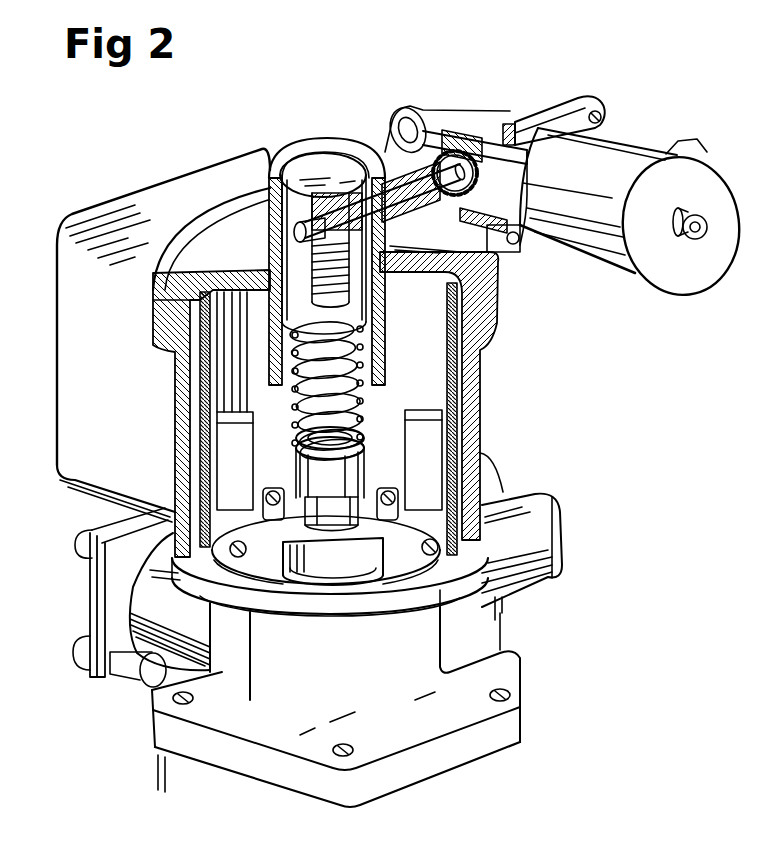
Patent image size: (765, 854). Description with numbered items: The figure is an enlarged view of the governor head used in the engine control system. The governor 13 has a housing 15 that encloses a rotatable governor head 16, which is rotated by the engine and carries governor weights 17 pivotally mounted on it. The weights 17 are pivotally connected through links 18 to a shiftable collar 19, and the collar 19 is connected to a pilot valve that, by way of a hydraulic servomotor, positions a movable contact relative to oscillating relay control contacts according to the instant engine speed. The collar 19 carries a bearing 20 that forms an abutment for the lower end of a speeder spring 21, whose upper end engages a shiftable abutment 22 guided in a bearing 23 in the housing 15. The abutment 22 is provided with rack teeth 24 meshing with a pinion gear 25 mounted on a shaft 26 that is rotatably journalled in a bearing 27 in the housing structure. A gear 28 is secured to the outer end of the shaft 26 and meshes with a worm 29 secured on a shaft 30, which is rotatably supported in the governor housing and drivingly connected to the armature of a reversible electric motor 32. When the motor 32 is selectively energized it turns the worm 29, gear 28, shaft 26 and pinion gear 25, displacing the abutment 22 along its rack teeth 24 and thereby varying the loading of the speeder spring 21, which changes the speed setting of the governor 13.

The governor 13 is at (510, 420).
The housing 15 is at (172, 398).
The governor head 16 is at (343, 569).
The governor weights 17 is at (256, 418).
The links 18 is at (285, 518).
The shiftable collar 19 is at (366, 458).
The bearing 20 is at (332, 490).
The speeder spring 21 is at (363, 398).
The shiftable abutment 22 is at (323, 243).
The bearing 23 is at (268, 247).
The rack teeth 24 is at (328, 300).
The pinion gear 25 is at (302, 243).
The shaft 26 is at (436, 212).
The bearing 27 is at (412, 208).
The gear 28 is at (468, 196).
The worm 29 is at (465, 140).
The shaft 30 is at (520, 170).
The reversible electric motor 32 is at (582, 256).